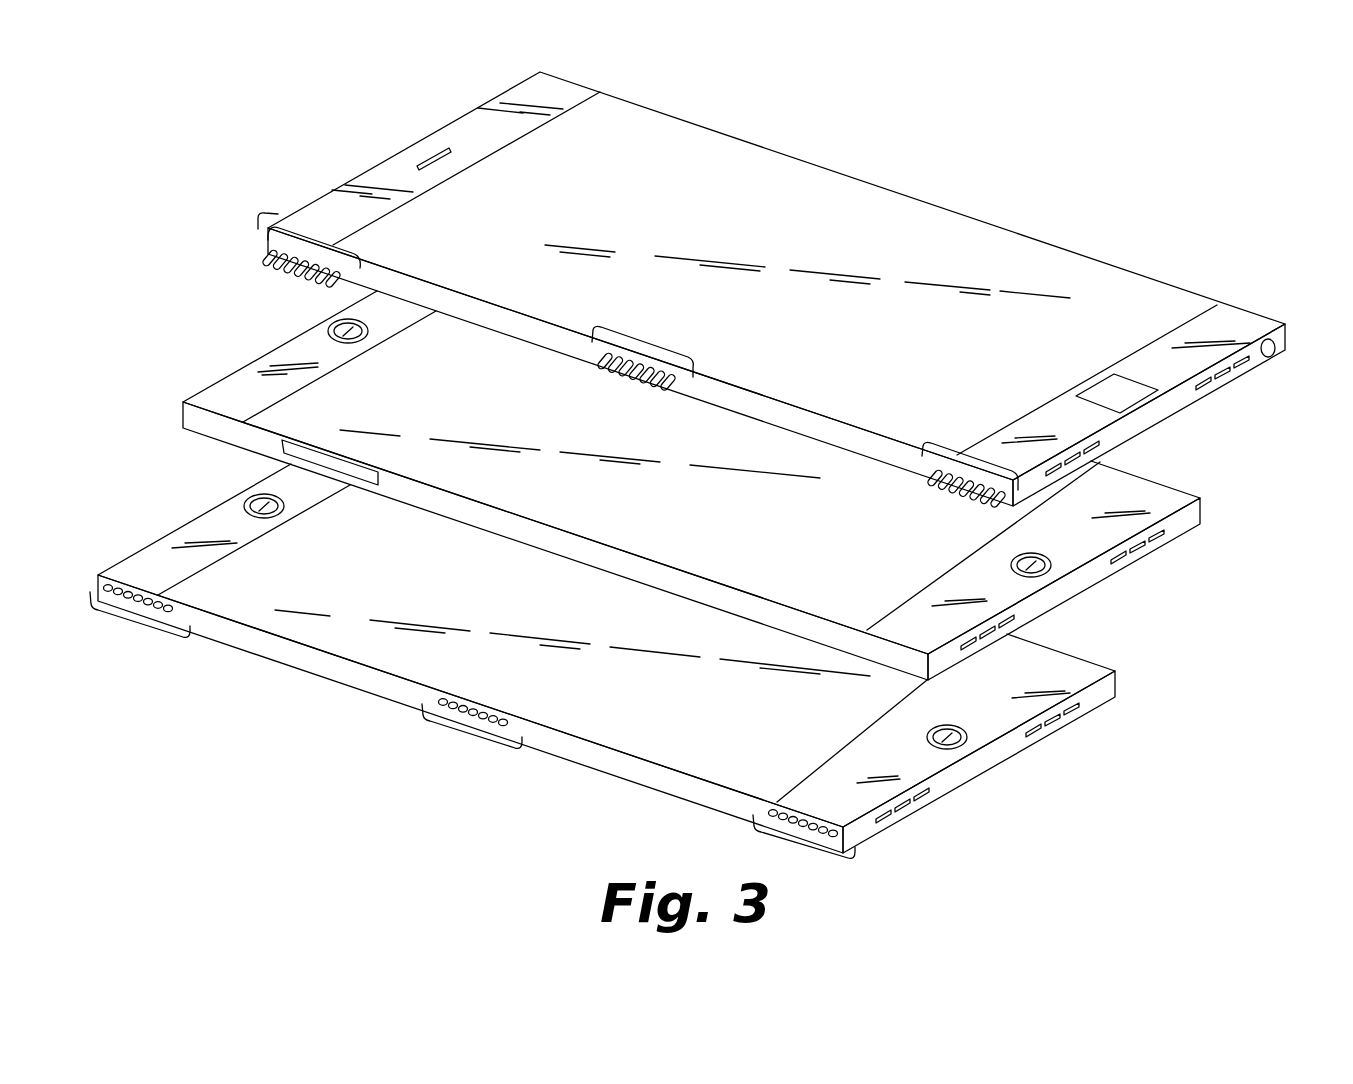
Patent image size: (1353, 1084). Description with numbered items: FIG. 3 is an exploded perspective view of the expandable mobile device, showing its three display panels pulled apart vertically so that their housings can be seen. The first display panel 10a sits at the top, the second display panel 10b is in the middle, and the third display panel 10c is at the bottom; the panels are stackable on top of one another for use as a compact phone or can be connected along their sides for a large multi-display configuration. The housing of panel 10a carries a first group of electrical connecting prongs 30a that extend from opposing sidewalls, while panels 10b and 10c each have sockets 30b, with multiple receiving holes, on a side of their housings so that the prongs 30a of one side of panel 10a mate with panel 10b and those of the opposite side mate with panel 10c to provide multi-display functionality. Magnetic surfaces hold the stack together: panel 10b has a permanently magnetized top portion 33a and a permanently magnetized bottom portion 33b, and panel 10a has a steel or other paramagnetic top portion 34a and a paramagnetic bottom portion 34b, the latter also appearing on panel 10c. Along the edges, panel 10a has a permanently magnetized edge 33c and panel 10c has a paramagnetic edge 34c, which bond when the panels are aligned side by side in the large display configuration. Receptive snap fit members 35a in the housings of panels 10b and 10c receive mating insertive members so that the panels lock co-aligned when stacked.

The first display panel 10a is at (898, 357).
The second display panel 10b is at (833, 557).
The third display panel 10c is at (700, 727).
The electrical connecting prongs 30a is at (316, 226).
The sockets 30b is at (137, 620).
The permanently magnetized top portion 33a is at (227, 395).
The permanently magnetized bottom portion 33b is at (1143, 498).
The permanently magnetized edge 33c is at (752, 407).
The paramagnetic top portion 34a is at (464, 137).
The paramagnetic bottom portion 34b is at (1222, 373).
The paramagnetic edge 34c is at (630, 768).
The receptive snap fit members 35a is at (348, 330).